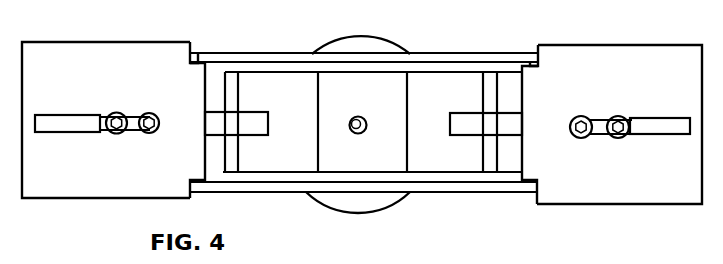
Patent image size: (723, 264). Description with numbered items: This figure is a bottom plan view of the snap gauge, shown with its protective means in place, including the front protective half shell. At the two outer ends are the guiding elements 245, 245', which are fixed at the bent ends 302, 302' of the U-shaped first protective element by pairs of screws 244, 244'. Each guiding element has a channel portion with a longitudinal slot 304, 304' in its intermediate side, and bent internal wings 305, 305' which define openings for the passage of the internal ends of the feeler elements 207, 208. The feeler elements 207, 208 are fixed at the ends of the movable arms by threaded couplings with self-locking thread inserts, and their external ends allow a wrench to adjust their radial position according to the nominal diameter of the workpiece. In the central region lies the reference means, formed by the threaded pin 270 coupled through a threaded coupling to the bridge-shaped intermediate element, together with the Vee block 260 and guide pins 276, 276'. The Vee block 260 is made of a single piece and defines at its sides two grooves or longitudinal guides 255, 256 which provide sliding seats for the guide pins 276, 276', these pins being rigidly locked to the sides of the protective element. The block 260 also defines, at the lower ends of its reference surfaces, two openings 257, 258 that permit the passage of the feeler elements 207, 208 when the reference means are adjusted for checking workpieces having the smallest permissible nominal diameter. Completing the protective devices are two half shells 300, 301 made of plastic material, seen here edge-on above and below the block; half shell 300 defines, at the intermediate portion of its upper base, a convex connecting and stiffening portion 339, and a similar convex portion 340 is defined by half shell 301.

The guiding element 245 is at (106, 134).
The longitudinal slot 304 is at (67, 70).
The bent end 302 is at (123, 69).
The screws 244 is at (132, 172).
The guiding element 245' is at (619, 139).
The longitudinal slot 304' is at (661, 71).
The bent end 302' is at (611, 71).
The screws 244' is at (599, 177).
The half shell 301 is at (450, 60).
The half shell 300 is at (425, 188).
The bent internal wing 305 is at (191, 49).
The bent internal wing 305' is at (532, 50).
The guide pin 276 is at (202, 142).
The guide pin 276' is at (522, 146).
The Vee block 260 is at (318, 172).
The feeler element 207 is at (211, 120).
The longitudinal guide 255 is at (235, 125).
The opening 257 is at (255, 128).
The feeler element 208 is at (518, 110).
The opening 258 is at (462, 127).
The longitudinal guide 256 is at (488, 128).
The threaded pin 270 is at (350, 130).
The convex connecting and stiffening portion 340 is at (378, 49).
The convex connecting and stiffening portion 339 is at (372, 202).